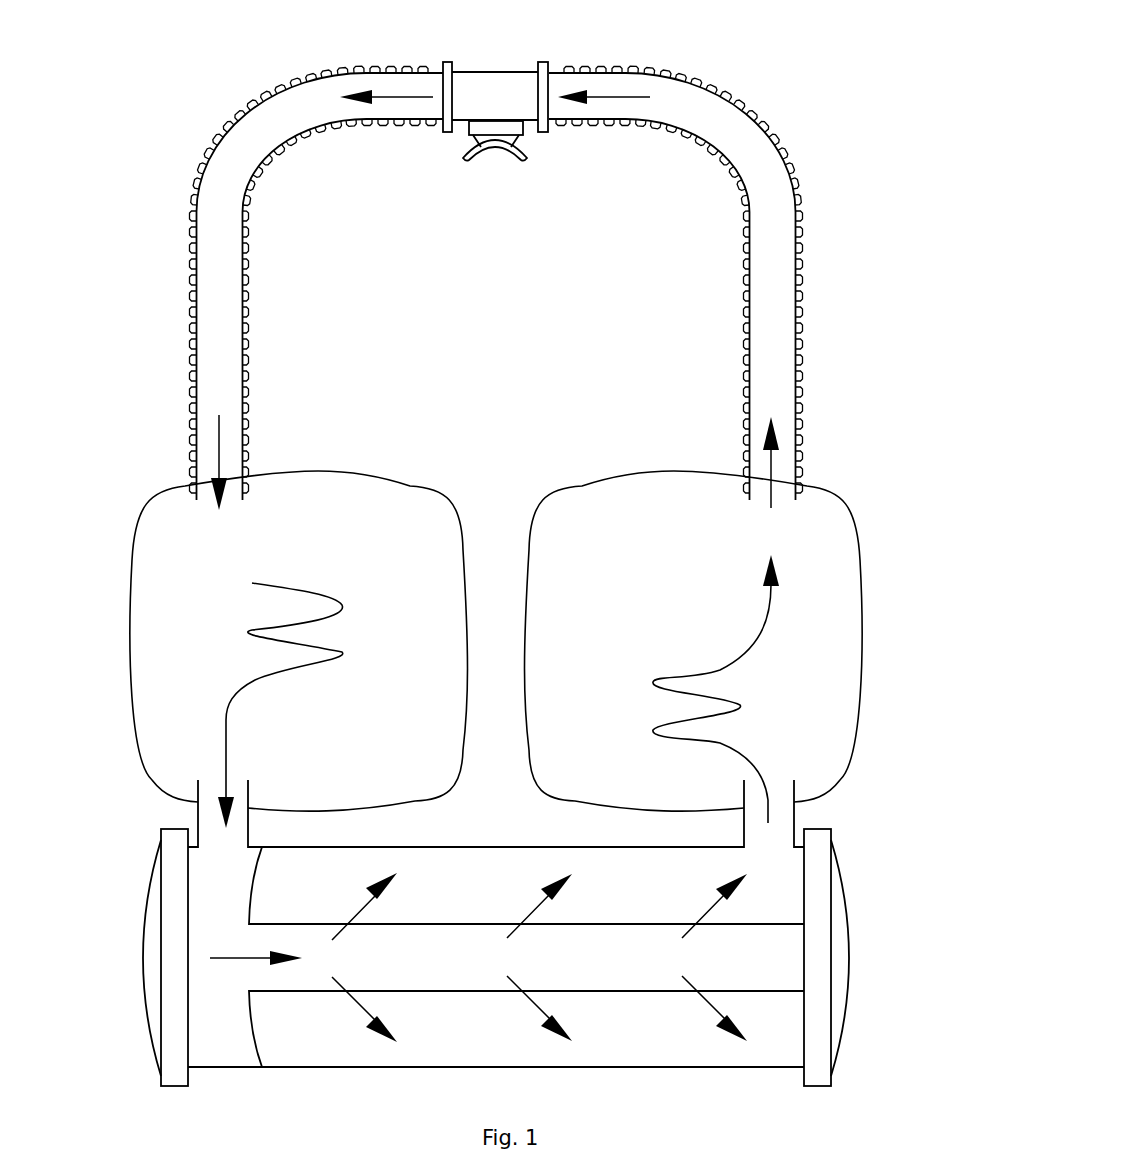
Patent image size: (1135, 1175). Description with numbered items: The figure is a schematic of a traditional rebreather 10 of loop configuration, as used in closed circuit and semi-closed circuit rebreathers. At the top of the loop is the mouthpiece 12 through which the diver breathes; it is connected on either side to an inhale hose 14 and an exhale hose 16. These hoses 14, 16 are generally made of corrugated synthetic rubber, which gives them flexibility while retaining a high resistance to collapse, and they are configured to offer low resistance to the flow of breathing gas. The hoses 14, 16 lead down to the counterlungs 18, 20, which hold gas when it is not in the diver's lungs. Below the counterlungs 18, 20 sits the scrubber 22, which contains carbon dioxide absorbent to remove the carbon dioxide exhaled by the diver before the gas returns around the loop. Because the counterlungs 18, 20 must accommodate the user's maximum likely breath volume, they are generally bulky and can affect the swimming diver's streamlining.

The rebreather 10 is at (140, 108).
The mouthpiece 12 is at (500, 82).
The inhale hose 14 is at (783, 283).
The exhale hose 16 is at (204, 298).
The counterlung 18 is at (163, 551).
The counterlung 20 is at (809, 550).
The scrubber 22 is at (217, 905).